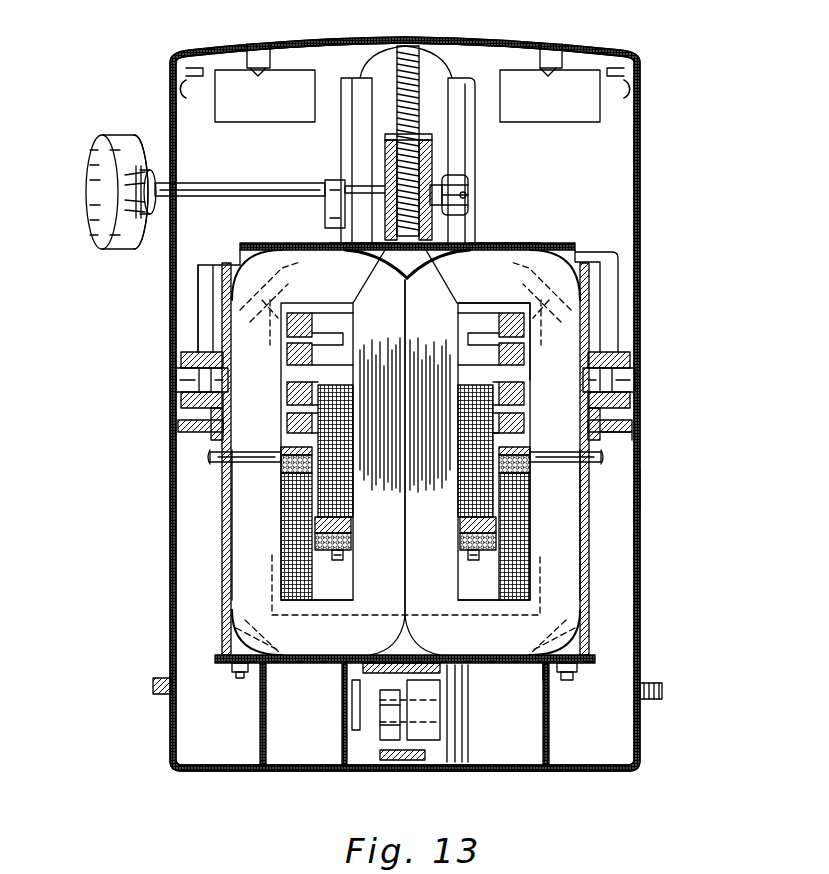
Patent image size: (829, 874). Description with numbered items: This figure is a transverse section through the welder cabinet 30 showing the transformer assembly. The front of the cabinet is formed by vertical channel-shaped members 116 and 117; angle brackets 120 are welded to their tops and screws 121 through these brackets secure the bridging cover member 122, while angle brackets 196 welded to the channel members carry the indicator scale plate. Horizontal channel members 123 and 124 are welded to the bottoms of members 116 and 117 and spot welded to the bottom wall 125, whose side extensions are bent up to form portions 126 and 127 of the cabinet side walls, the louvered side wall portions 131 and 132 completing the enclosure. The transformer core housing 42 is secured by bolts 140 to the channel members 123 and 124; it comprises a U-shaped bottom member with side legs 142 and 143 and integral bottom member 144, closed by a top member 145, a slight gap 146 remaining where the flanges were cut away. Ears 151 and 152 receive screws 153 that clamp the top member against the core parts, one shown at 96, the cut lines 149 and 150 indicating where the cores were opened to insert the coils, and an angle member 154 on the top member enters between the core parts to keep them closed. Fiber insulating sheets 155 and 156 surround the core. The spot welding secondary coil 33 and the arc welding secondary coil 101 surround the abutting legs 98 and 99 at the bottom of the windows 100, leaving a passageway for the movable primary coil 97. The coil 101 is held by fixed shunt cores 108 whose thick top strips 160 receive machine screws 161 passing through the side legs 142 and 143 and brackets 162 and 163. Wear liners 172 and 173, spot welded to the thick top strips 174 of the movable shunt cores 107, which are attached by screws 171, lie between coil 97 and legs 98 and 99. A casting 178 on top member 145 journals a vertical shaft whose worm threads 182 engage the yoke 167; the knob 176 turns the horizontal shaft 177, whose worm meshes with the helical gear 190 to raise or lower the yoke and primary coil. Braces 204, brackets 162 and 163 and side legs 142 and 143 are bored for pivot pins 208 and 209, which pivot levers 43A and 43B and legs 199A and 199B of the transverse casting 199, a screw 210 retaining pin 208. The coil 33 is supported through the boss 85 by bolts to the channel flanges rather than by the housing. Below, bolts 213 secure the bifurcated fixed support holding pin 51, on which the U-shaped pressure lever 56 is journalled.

The bridging cover member 122 is at (358, 55).
The angle brackets 196 is at (398, 48).
The angle brackets 120 is at (186, 90).
The screws 121 is at (262, 76).
The channel-shaped member 116 is at (186, 135).
The channel-shaped member 117 is at (634, 160).
The worm threads 182 is at (380, 100).
The yoke 167 is at (432, 150).
The horizontal rotary shaft 177 is at (252, 183).
The knob 176 is at (86, 192).
The helical worm gear 190 is at (440, 195).
The transverse casting 199 is at (228, 243).
The leg of transverse casting 199A is at (608, 300).
The leg of transverse casting 199B is at (205, 293).
The screws 153 is at (265, 243).
The casting 178 is at (362, 243).
The top member 145 is at (515, 243).
The ears 152 is at (270, 285).
The angle member 154 is at (325, 302).
The insulating material sheet 156 is at (492, 250).
The spot welding secondary coil 33 is at (492, 316).
The ears 151 is at (262, 318).
The joining line 149 is at (357, 305).
The joining line 150 is at (424, 300).
The lever 43A is at (618, 358).
The lever 43B is at (185, 410).
The pivot pin 209 is at (180, 375).
The pivot pin 208 is at (627, 380).
The braces 204 is at (232, 402).
The screw 210 is at (633, 422).
The bracket 163 is at (212, 445).
The bracket 162 is at (598, 446).
The top strips 160 is at (285, 450).
The machine screws 161 is at (268, 463).
The primary coil 97 is at (500, 445).
The wear liner 172 is at (353, 480).
The wear liner 173 is at (458, 482).
The top strips 174 is at (351, 525).
The fixed shunt cores 108 is at (281, 468).
The side wall portion 131 is at (176, 495).
The side wall portion 132 is at (640, 537).
The cabinet 30 is at (640, 490).
The boss 85 is at (232, 525).
The core part 96 is at (580, 535).
The abutting leg portion 98 is at (460, 525).
The movable shunt core 107 is at (460, 545).
The screws 171 is at (337, 560).
The side leg 142 is at (225, 570).
The side leg 143 is at (590, 565).
The abutting leg portion 99 is at (405, 590).
The gap 146 is at (240, 630).
The arc welding secondary coil 101 is at (297, 600).
The windows 100 is at (328, 600).
The insulating material sheet 155 is at (410, 640).
The transformer core housing 42 is at (590, 657).
The bolts 213 is at (352, 690).
The bottom member 144 is at (512, 663).
The side wall portion 126 is at (160, 695).
The side wall portion 127 is at (652, 700).
The bolts 140 is at (240, 679).
The channel-shaped member 123 is at (266, 715).
The channel-shaped member 124 is at (543, 715).
The pin 51 is at (368, 740).
The pressure lever 56 is at (410, 760).
The bottom wall 125 is at (497, 771).